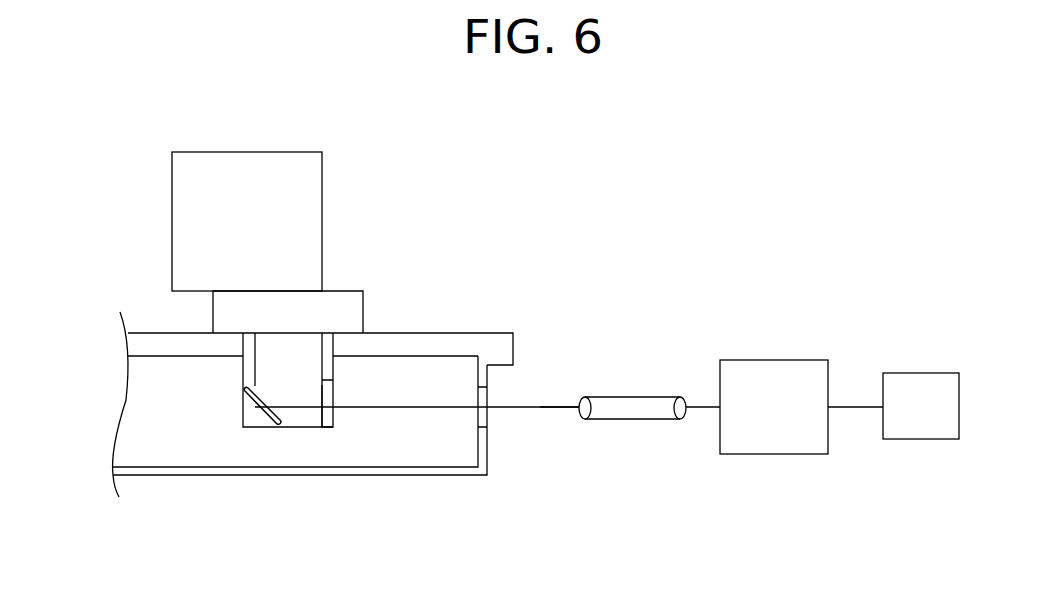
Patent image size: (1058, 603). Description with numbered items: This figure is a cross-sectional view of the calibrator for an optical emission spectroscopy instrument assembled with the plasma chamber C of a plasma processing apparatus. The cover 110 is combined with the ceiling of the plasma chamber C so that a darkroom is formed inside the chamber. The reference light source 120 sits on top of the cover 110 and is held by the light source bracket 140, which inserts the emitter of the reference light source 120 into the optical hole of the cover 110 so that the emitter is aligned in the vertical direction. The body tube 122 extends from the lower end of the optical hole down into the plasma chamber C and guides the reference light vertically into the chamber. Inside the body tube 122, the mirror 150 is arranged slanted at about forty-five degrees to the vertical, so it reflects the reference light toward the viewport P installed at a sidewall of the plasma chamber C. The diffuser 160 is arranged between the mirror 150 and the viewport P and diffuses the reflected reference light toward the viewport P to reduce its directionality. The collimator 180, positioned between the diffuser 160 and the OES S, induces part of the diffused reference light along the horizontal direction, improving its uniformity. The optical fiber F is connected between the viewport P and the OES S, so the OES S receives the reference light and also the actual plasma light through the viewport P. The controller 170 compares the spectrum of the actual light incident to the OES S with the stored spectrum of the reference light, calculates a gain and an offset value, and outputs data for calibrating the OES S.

The cover 110 is at (513, 339).
The reference light source 120 is at (322, 219).
The body tube 122 is at (243, 386).
The light source bracket 140 is at (363, 313).
The mirror 150 is at (256, 428).
The diffuser 160 is at (322, 428).
The controller 170 is at (919, 440).
The collimator 180 is at (630, 420).
The optical emission spectroscopy (OES) S is at (775, 454).
The viewport P is at (487, 418).
The optical fiber F is at (558, 409).
The plasma chamber C is at (179, 473).